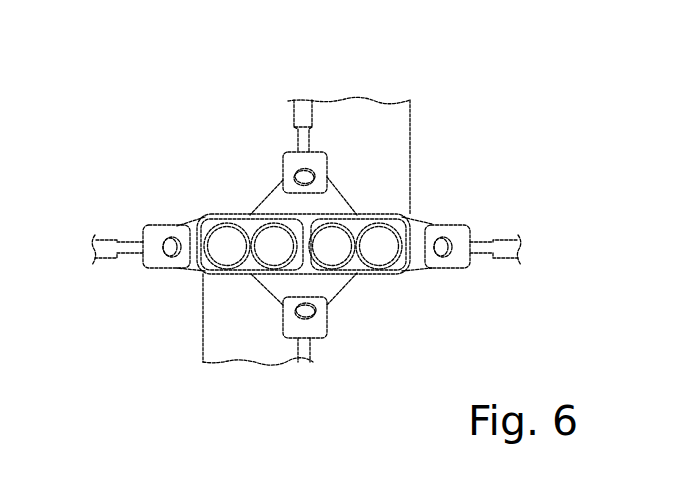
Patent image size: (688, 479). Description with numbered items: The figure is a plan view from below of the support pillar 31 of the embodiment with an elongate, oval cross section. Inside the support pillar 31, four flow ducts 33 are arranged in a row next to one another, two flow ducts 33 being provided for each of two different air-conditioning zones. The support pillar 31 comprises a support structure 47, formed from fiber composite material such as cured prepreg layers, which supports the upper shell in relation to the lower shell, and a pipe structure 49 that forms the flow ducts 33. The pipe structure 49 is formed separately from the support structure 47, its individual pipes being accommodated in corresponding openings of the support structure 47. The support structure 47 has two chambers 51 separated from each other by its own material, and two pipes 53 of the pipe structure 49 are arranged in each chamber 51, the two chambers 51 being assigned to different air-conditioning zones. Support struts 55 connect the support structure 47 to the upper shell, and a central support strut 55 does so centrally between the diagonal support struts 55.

The support pillar 31 is at (368, 142).
The support strut 55 is at (298, 109).
The chamber 51 is at (353, 225).
The pipe structure 49 is at (233, 255).
The pipe 53 is at (280, 255).
The flow duct 33 is at (355, 256).
The support structure 47 is at (285, 300).